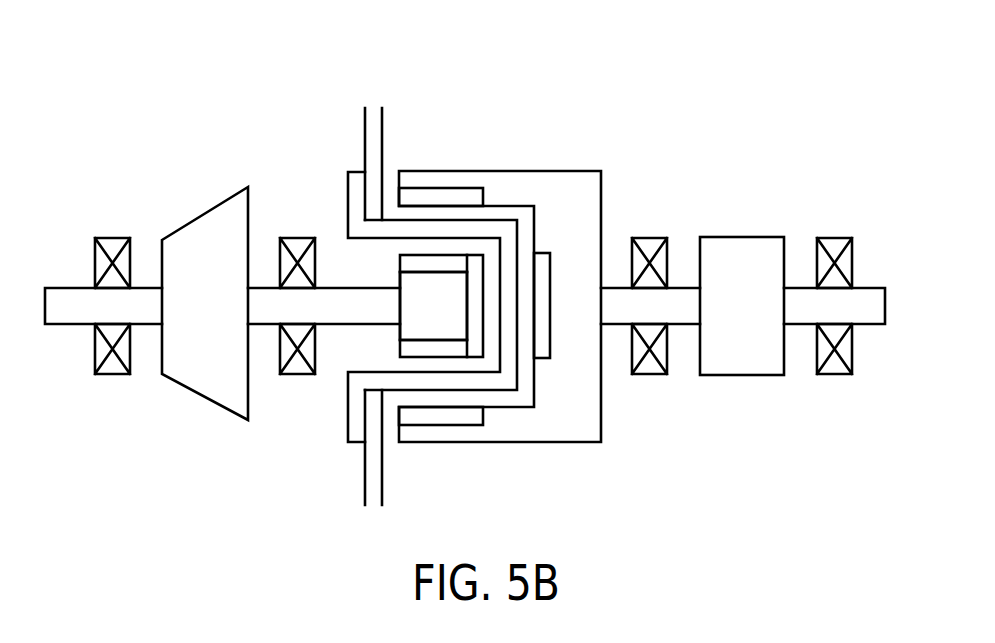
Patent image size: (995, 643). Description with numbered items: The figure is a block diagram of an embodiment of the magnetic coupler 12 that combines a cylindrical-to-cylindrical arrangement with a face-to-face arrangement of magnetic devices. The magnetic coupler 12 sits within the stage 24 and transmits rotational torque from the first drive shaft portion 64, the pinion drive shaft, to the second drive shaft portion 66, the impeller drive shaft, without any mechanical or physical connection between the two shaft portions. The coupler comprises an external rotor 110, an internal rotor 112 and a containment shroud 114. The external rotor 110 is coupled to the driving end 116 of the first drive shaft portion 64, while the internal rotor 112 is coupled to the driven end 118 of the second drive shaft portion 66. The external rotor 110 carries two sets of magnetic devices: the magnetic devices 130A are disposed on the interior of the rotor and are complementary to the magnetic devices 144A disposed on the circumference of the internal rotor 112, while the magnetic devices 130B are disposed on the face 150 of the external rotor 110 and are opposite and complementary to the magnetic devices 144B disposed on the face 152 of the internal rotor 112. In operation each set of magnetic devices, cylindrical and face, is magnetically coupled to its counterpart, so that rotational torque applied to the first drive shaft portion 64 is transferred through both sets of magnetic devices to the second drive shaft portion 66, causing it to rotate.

The magnetic coupler 12 is at (524, 103).
The stage 24 is at (639, 78).
The first drive shaft portion 64 is at (682, 287).
The second drive shaft portion 66 is at (327, 285).
The external rotor 110 is at (567, 166).
The internal rotor 112 is at (395, 338).
The containment shroud 114 is at (348, 177).
The driving end 116 is at (672, 380).
The driven end 118 is at (322, 397).
The magnetic devices 130A is at (437, 195).
The magnetic devices 130B is at (542, 275).
The magnetic devices 144A is at (433, 263).
The magnetic devices 144B is at (475, 347).
The face 150 is at (533, 238).
The face 152 is at (465, 283).